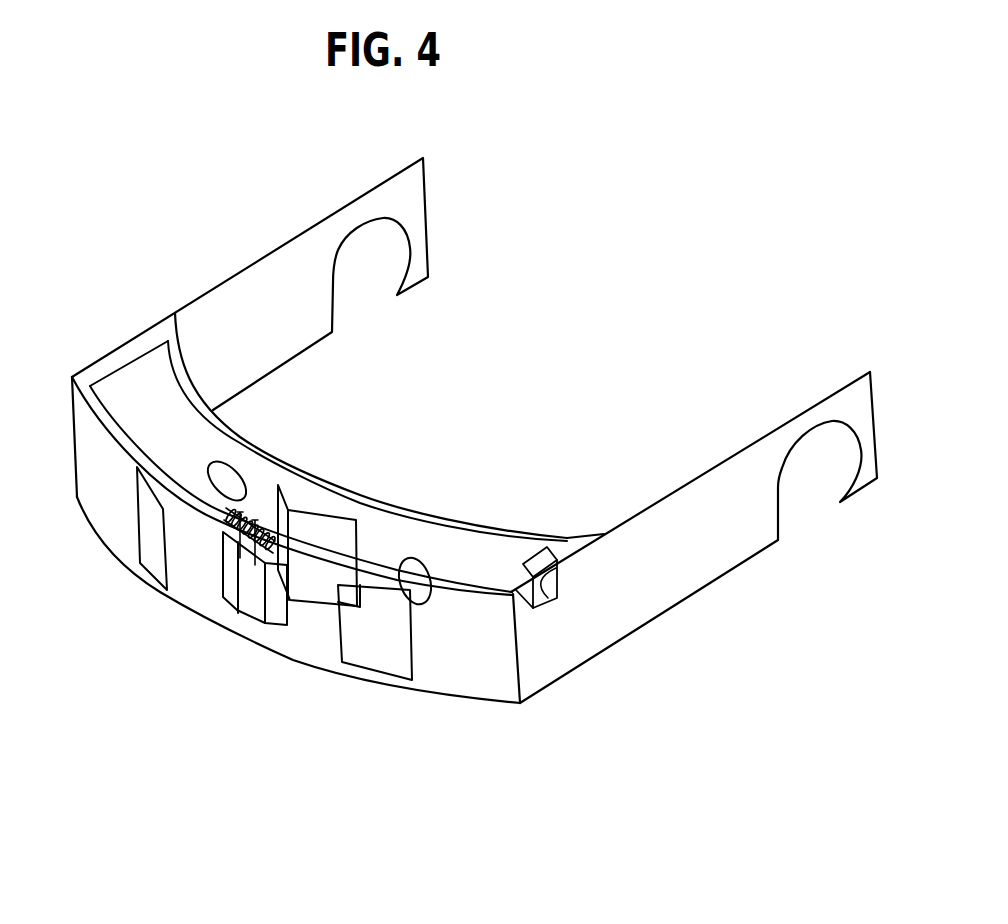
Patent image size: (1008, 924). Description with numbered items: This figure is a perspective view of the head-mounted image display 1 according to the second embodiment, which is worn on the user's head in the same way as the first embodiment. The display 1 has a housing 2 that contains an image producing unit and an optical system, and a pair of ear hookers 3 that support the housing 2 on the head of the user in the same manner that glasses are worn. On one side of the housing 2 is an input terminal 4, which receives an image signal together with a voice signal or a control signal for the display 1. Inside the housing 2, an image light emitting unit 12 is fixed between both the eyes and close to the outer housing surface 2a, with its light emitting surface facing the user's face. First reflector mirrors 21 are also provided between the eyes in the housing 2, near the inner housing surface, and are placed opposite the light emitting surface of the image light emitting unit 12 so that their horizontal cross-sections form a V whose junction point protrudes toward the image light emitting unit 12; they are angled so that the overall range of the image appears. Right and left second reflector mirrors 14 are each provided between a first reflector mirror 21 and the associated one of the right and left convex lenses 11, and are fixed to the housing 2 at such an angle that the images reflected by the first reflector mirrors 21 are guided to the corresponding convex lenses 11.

The head-mounted image display 1 is at (467, 468).
The housing 2 is at (193, 437).
The outer housing surface 2a is at (303, 640).
The ear hookers 3 is at (278, 297).
The input terminal 4 is at (557, 596).
The convex lenses 11 is at (223, 480).
The image light emitting unit 12 is at (238, 608).
The second reflector mirrors 14 is at (153, 558).
The first reflector mirrors 21 is at (284, 497).